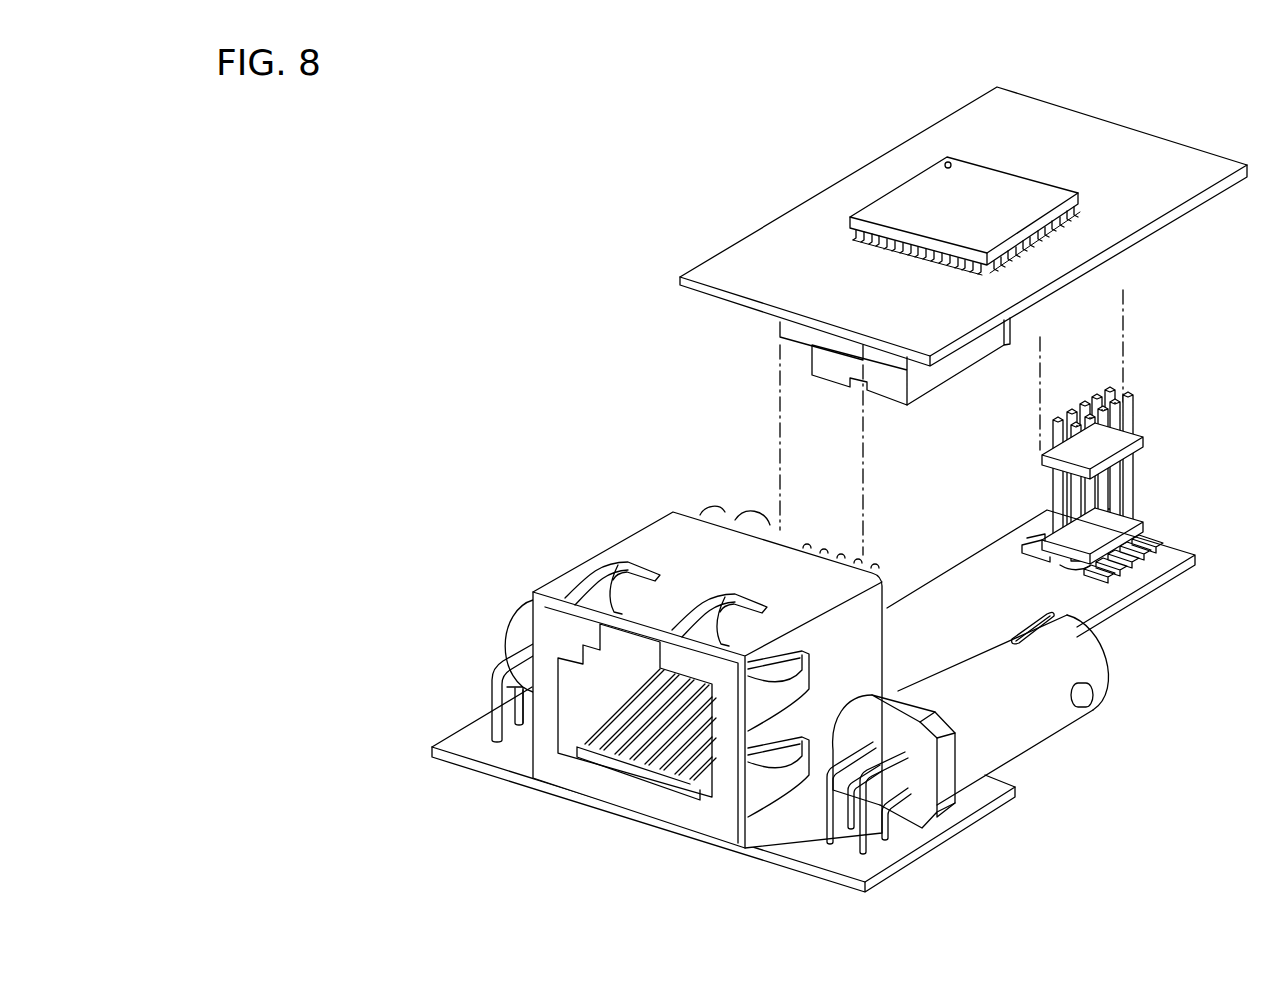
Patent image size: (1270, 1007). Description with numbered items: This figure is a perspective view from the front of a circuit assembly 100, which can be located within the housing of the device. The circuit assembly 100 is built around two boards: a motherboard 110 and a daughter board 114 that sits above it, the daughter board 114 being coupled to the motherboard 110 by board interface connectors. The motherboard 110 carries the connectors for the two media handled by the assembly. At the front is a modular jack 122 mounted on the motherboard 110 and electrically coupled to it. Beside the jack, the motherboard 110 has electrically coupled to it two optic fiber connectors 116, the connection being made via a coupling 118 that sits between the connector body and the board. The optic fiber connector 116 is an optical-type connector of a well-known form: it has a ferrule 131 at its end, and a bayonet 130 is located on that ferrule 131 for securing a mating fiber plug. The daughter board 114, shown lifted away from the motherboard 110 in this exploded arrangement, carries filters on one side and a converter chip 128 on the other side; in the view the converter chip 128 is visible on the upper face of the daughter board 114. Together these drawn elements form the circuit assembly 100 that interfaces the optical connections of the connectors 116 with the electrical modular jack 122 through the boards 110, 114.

The circuit assembly 100 is at (636, 448).
The motherboard 110 is at (455, 746).
The daughter board 114 is at (1122, 147).
The optic fiber connector 116 is at (1028, 735).
The coupling 118 is at (867, 848).
The RJ-45 jack 122 is at (568, 783).
The converter chip 128 is at (940, 217).
The bayonet 130 is at (1096, 699).
The ferrule 131 is at (1088, 652).